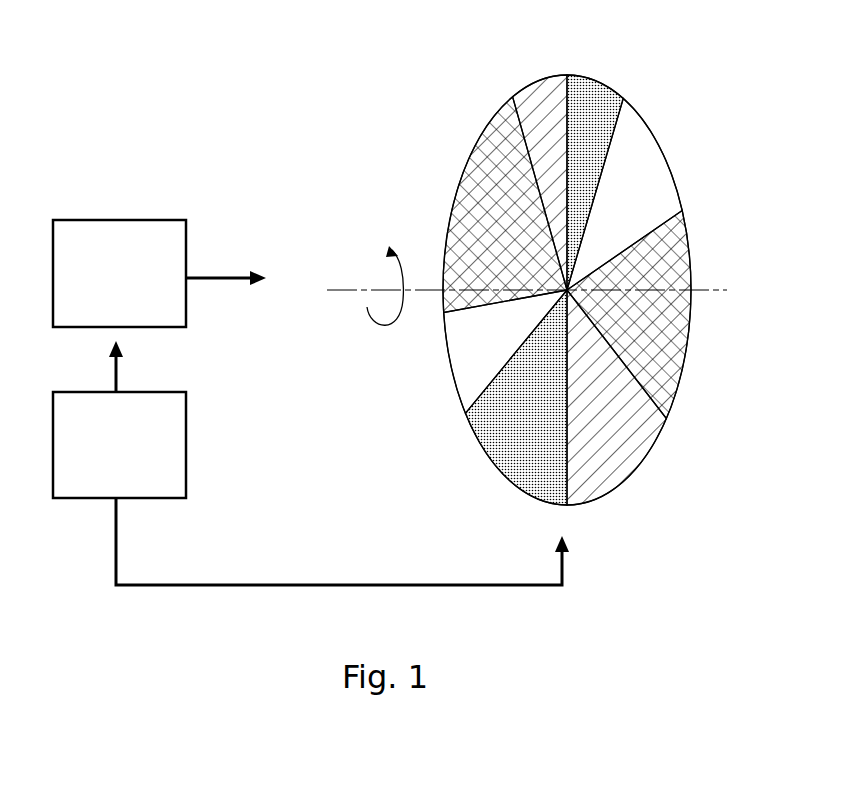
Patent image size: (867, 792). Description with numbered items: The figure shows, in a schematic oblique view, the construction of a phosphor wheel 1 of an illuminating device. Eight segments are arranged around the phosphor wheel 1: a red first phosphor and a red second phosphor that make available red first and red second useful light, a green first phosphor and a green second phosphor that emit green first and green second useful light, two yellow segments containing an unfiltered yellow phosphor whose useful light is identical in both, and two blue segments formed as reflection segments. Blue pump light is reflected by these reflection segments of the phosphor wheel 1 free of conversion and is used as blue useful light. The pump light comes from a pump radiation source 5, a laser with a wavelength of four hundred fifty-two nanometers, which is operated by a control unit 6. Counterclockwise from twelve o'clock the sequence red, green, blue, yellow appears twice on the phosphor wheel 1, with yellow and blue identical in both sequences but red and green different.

The phosphor wheel 1 is at (427, 112).
The pump radiation source 5 is at (119, 273).
The control unit 6 is at (119, 445).